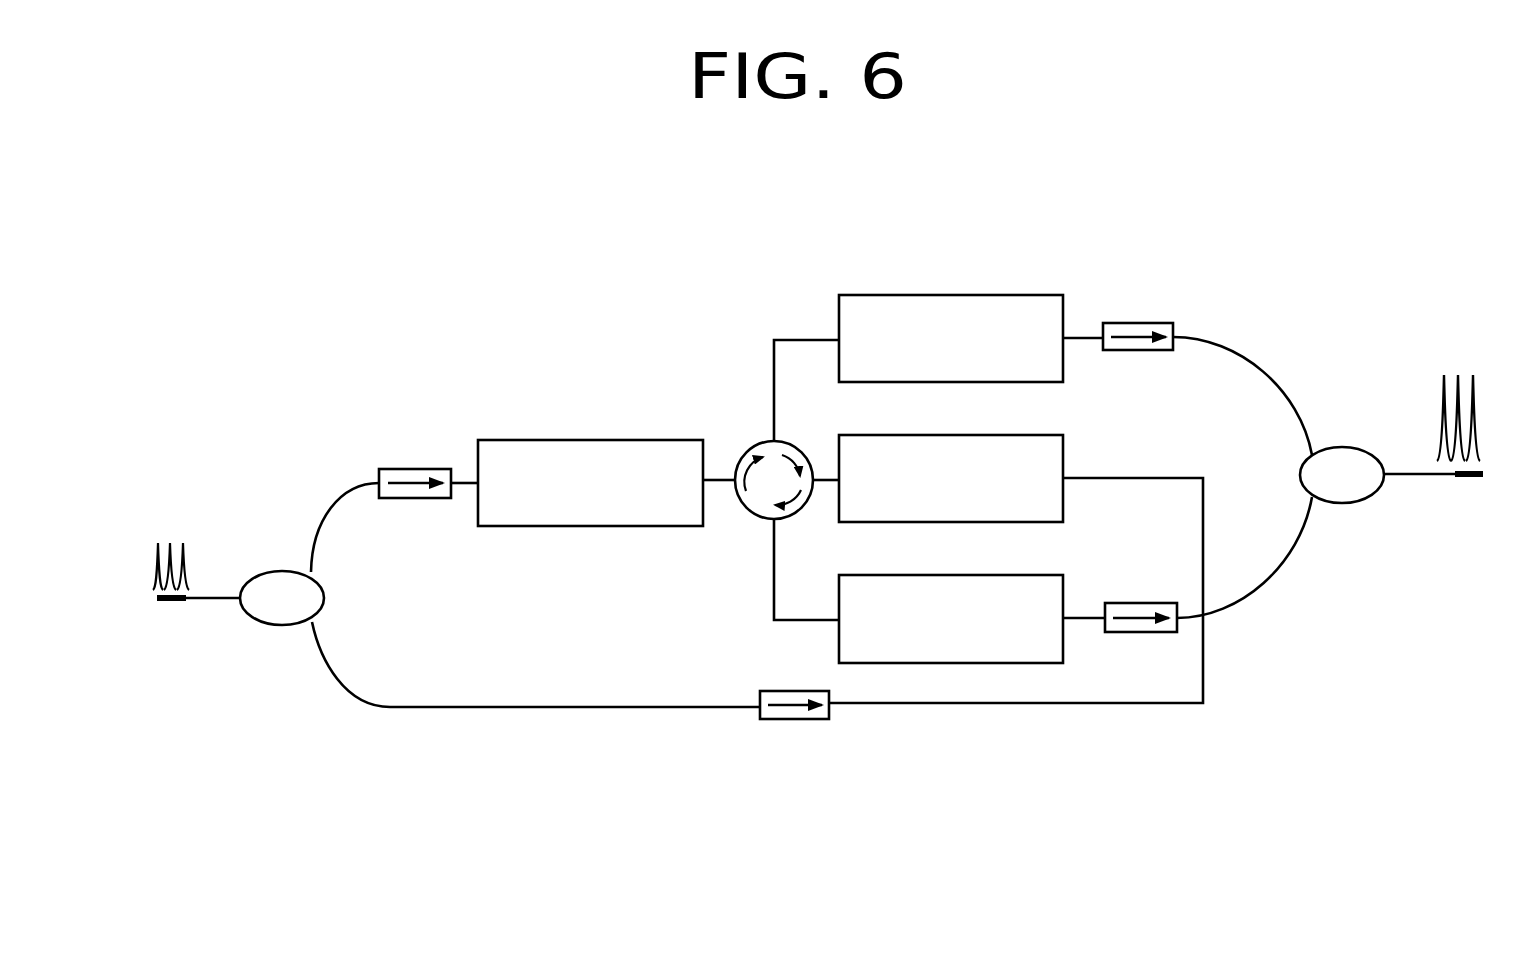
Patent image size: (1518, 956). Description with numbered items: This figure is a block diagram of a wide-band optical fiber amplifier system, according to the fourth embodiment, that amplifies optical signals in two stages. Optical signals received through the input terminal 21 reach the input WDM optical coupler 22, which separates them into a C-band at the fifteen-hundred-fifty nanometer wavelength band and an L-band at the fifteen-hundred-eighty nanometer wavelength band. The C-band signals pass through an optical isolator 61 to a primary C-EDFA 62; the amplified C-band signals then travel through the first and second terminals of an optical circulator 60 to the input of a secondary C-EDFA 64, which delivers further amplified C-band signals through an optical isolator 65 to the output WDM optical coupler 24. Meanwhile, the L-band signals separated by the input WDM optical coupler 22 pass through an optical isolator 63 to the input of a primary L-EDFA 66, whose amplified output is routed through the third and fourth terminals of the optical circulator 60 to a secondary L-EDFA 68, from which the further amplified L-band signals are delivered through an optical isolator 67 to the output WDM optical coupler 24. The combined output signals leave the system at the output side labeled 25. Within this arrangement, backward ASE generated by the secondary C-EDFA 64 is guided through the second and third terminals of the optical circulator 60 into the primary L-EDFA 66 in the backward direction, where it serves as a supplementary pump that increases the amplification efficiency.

The input terminal 21 is at (172, 602).
The input WDM optical coupler 22 is at (258, 571).
The output WDM optical coupler 24 is at (1360, 445).
The output optical signal 25 is at (1473, 478).
The optical circulator 60 is at (748, 448).
The optical isolator 61 is at (422, 468).
The primary C-EDFA 62 is at (589, 438).
The optical isolator 63 is at (787, 690).
The secondary C-EDFA 64 is at (951, 294).
The optical isolator 65 is at (1131, 322).
The primary L-EDFA 66 is at (951, 434).
The optical isolator 67 is at (1133, 602).
The secondary L-EDFA 68 is at (951, 574).